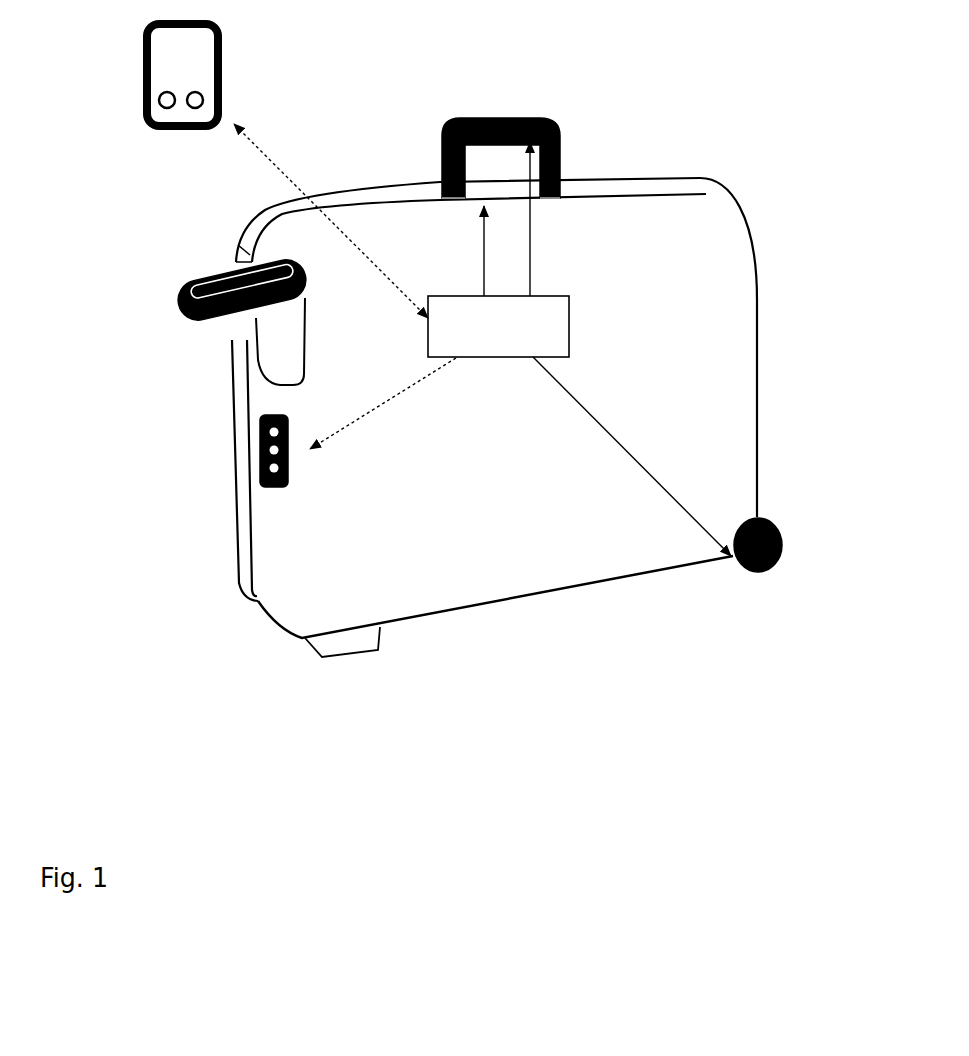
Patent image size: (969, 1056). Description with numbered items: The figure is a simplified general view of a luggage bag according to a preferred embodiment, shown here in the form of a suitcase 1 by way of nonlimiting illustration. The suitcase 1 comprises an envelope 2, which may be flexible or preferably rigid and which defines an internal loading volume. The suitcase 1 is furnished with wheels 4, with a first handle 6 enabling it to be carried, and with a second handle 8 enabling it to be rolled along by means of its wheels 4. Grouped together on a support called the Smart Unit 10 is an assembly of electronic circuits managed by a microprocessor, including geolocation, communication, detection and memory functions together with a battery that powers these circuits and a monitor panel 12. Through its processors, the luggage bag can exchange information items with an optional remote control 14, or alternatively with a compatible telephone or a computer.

The suitcase 1 is at (458, 388).
The envelope 2 is at (662, 222).
The wheels 4 is at (768, 572).
The first handle 6 is at (516, 117).
The second handle 8 is at (186, 322).
The Smart Unit 10 is at (498, 343).
The monitor panel 12 is at (262, 480).
The remote control 14 is at (204, 53).